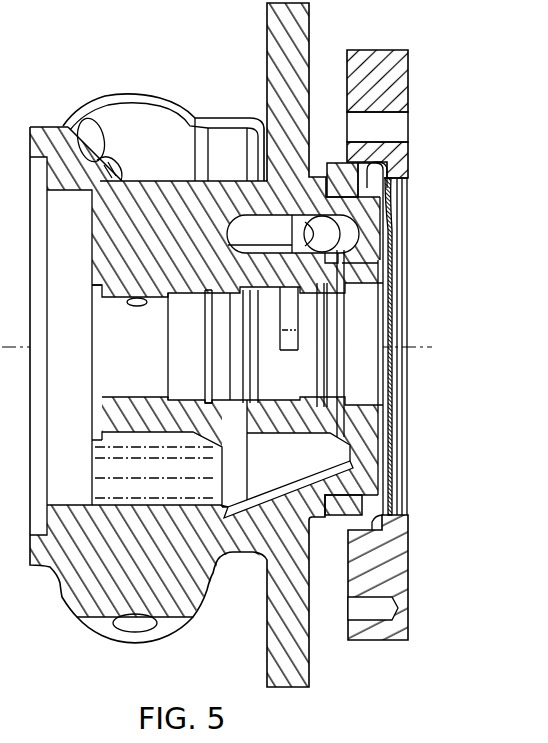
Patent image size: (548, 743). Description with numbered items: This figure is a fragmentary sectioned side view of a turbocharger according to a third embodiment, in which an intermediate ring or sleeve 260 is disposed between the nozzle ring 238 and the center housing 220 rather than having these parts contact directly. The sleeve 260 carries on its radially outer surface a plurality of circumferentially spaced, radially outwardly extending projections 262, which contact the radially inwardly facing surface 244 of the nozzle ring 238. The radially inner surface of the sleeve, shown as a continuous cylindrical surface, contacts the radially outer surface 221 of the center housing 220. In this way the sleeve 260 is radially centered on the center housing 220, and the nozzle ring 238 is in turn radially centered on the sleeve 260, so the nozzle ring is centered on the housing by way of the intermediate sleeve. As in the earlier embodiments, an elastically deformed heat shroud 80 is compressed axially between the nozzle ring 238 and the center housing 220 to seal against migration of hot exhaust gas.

The center housing 220 is at (268, 48).
The projections 262 is at (337, 170).
The radially outer surface of the center housing 221 is at (359, 195).
The nozzle ring 238 is at (403, 570).
The heat shroud 80 is at (394, 482).
The radially inwardly facing surface of the nozzle ring 244 is at (373, 527).
The sleeve 260 is at (347, 503).